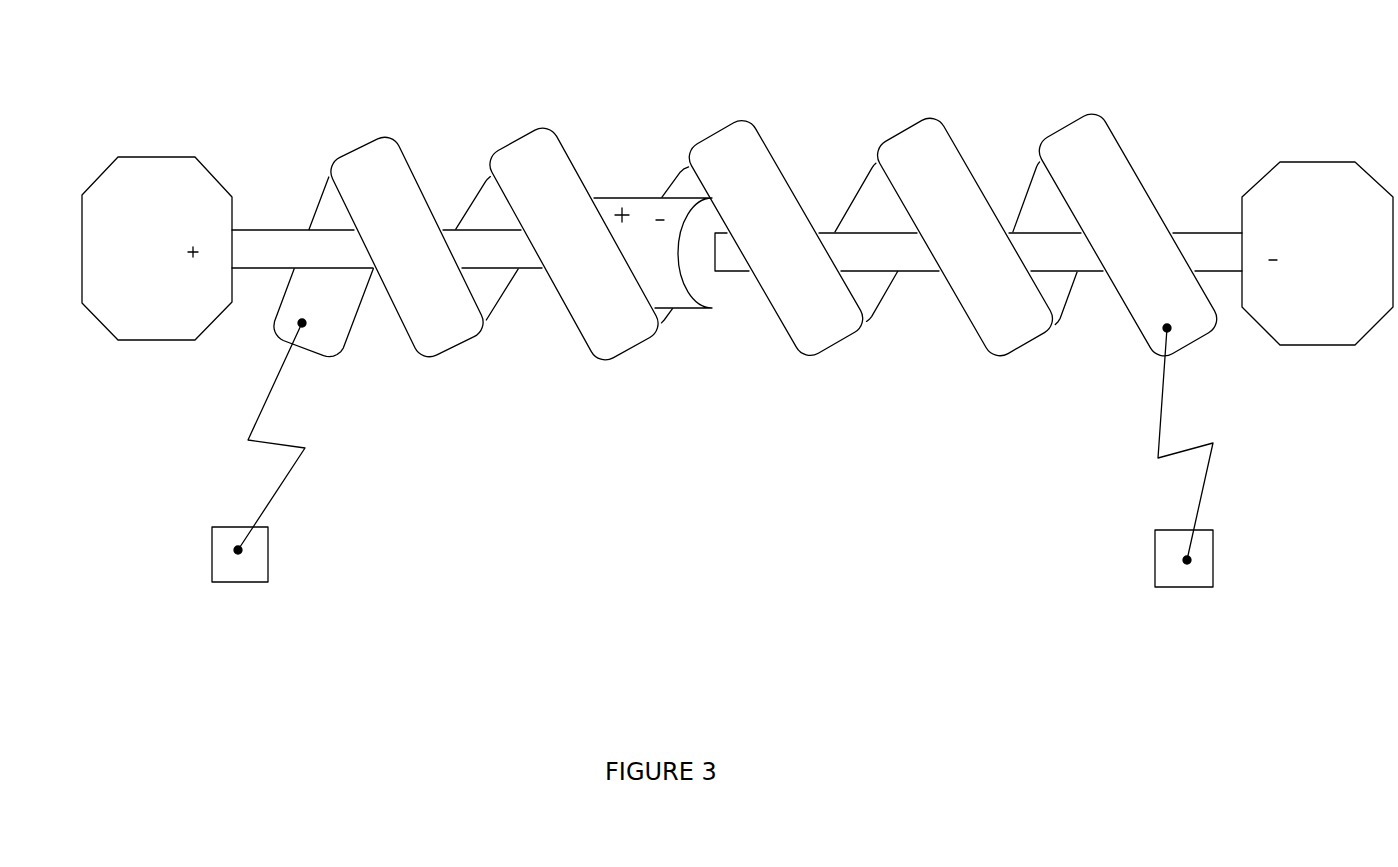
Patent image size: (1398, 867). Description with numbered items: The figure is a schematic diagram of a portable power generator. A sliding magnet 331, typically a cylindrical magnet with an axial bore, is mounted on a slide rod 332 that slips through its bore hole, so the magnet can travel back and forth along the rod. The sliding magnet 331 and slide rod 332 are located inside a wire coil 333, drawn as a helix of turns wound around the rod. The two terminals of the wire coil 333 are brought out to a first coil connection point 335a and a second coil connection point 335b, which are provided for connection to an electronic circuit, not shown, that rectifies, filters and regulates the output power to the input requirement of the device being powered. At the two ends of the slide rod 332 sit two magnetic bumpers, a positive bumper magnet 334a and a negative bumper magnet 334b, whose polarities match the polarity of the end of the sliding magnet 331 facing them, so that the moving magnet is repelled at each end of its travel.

The sliding magnet 331 is at (607, 197).
The slide rod 332 is at (268, 230).
The wire coil 333 is at (637, 352).
The positive bumper magnet 334a is at (157, 155).
The negative bumper magnet 334b is at (1317, 160).
The coil connection point 1 335a is at (268, 562).
The coil connection point 2 335b is at (1155, 557).